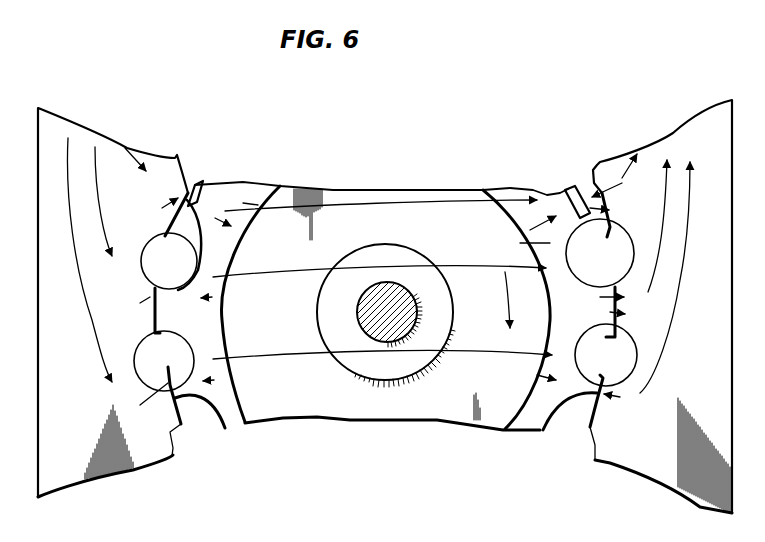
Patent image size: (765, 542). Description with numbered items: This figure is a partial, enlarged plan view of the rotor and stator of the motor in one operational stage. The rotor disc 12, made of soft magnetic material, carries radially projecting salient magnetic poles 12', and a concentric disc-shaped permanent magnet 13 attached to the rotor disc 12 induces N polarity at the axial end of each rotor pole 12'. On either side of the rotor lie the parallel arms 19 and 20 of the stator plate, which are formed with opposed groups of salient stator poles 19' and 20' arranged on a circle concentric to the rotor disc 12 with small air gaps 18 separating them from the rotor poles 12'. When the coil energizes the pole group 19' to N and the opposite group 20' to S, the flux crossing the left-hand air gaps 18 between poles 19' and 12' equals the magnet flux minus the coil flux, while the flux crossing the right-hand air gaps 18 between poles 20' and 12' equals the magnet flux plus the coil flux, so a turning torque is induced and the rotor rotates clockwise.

The rotor disc 12 is at (381, 325).
The magnetic poles 12' is at (384, 289).
The permanent magnet 13 is at (440, 405).
The air gaps 18 is at (185, 416).
The arm 19 is at (113, 310).
The salient poles 19' is at (176, 312).
The arm 20 is at (662, 306).
The salient poles 20' is at (588, 341).